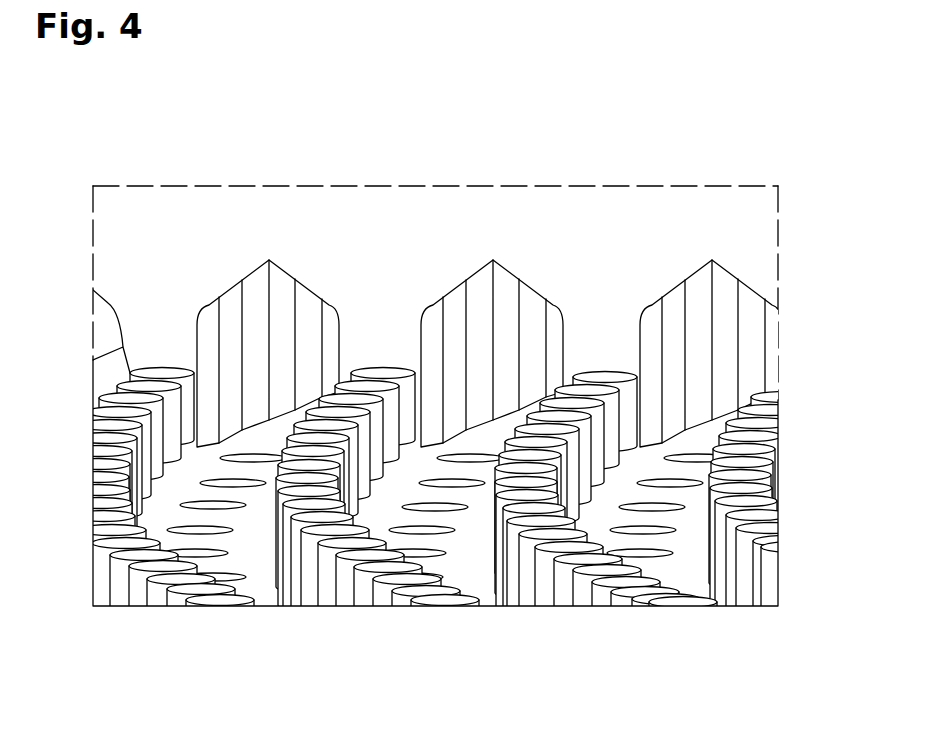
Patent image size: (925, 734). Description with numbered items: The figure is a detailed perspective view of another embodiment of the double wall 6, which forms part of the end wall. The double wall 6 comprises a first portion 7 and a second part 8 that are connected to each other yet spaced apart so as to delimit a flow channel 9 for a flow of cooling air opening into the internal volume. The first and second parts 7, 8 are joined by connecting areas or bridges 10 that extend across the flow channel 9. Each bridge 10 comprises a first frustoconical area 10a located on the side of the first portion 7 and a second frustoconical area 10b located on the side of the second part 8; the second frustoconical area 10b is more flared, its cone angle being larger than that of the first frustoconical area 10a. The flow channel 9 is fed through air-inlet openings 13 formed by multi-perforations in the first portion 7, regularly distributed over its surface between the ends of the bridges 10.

The double wall 6 is at (590, 150).
The first portion 7 is at (703, 580).
The second part 8 is at (492, 353).
The flow channel 9 is at (286, 308).
The bridge 10 is at (335, 583).
The first frustoconical area 10a is at (596, 430).
The second frustoconical area 10b is at (620, 300).
The air-inlet openings 13 is at (455, 486).